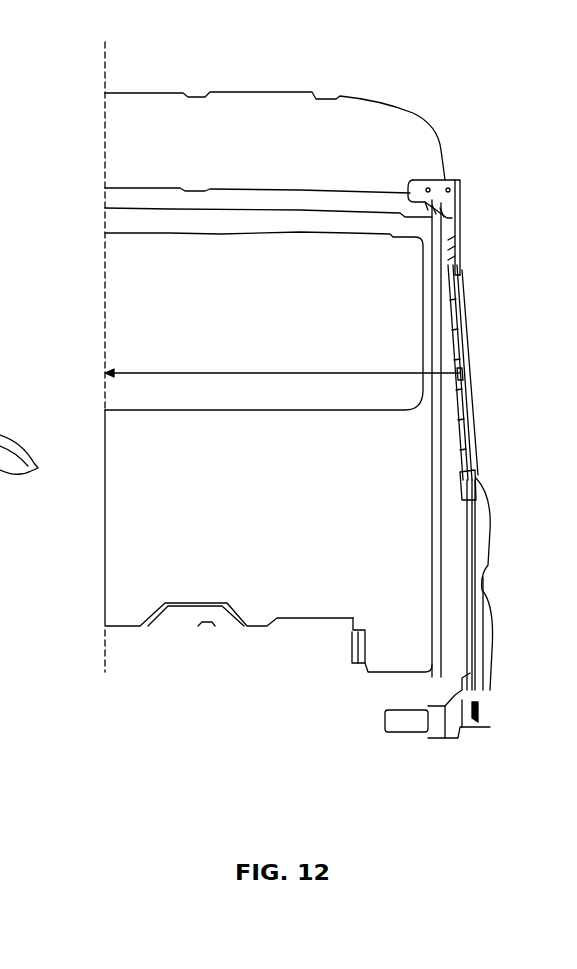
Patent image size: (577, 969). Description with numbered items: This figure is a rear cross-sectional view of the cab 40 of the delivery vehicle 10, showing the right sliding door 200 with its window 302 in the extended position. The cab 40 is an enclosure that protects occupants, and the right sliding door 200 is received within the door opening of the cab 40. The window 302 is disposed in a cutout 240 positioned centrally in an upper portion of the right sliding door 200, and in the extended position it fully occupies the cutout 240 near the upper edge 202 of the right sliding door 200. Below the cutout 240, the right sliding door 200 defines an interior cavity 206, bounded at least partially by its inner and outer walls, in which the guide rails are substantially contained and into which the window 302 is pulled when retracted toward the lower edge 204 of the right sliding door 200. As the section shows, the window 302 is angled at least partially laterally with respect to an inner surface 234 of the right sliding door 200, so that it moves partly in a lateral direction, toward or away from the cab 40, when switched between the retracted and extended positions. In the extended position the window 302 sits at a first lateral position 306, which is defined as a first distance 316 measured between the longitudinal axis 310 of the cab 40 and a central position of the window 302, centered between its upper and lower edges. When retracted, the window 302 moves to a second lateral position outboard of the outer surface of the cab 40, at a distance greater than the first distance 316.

The delivery vehicle 10 is at (465, 83).
The cab 40 is at (105, 540).
The right sliding door 200 is at (448, 249).
The upper edge 202 is at (463, 188).
The lower edge 204 is at (468, 735).
The interior cavity 206 is at (458, 674).
The inner surface 234 is at (432, 607).
The cutout 240 is at (477, 468).
The window 302 is at (465, 332).
The first lateral position 306 is at (462, 373).
The longitudinal axis 310 is at (105, 653).
The first distance 316 is at (295, 373).